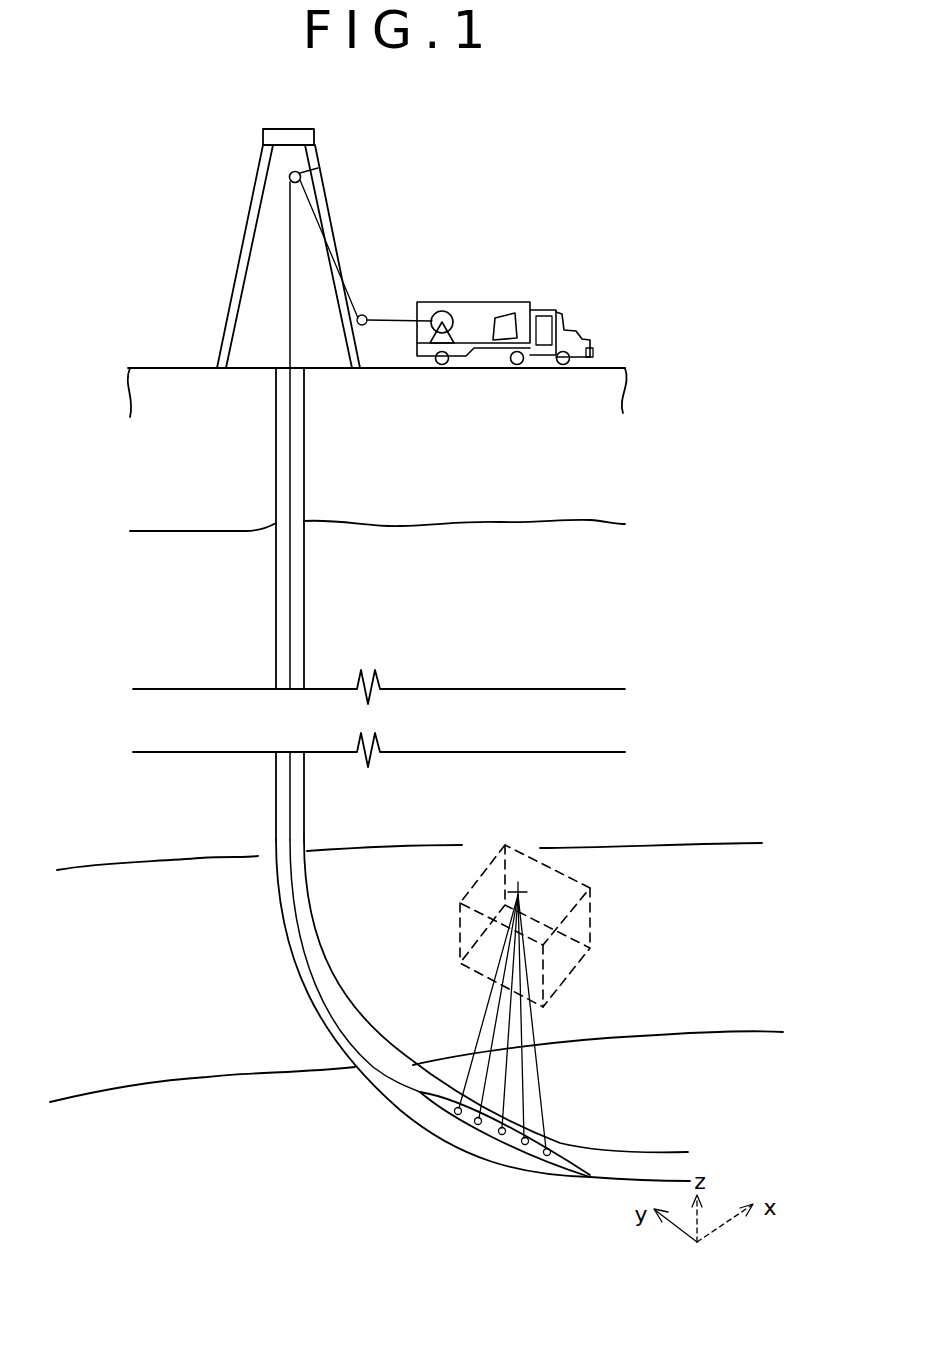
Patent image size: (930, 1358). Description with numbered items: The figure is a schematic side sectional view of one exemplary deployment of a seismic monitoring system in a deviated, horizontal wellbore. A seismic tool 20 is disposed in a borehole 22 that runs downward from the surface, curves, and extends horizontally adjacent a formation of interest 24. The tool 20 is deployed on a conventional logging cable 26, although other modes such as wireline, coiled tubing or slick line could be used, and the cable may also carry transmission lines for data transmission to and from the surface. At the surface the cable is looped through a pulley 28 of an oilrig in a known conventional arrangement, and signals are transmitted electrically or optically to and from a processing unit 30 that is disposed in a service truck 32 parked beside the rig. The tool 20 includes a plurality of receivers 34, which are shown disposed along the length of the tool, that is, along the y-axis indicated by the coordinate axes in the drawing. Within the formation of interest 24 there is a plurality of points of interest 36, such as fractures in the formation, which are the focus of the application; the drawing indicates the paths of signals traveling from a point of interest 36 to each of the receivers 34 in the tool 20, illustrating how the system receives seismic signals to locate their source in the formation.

The seismic tool 20 is at (487, 1130).
The borehole 22 is at (305, 559).
The formation of interest 24 is at (706, 986).
The logging cable 26 is at (293, 634).
The pulley 28 is at (289, 179).
The processing unit 30 is at (506, 320).
The service truck 32 is at (470, 305).
The receivers 34 is at (456, 1115).
The points of interest 36 is at (521, 892).